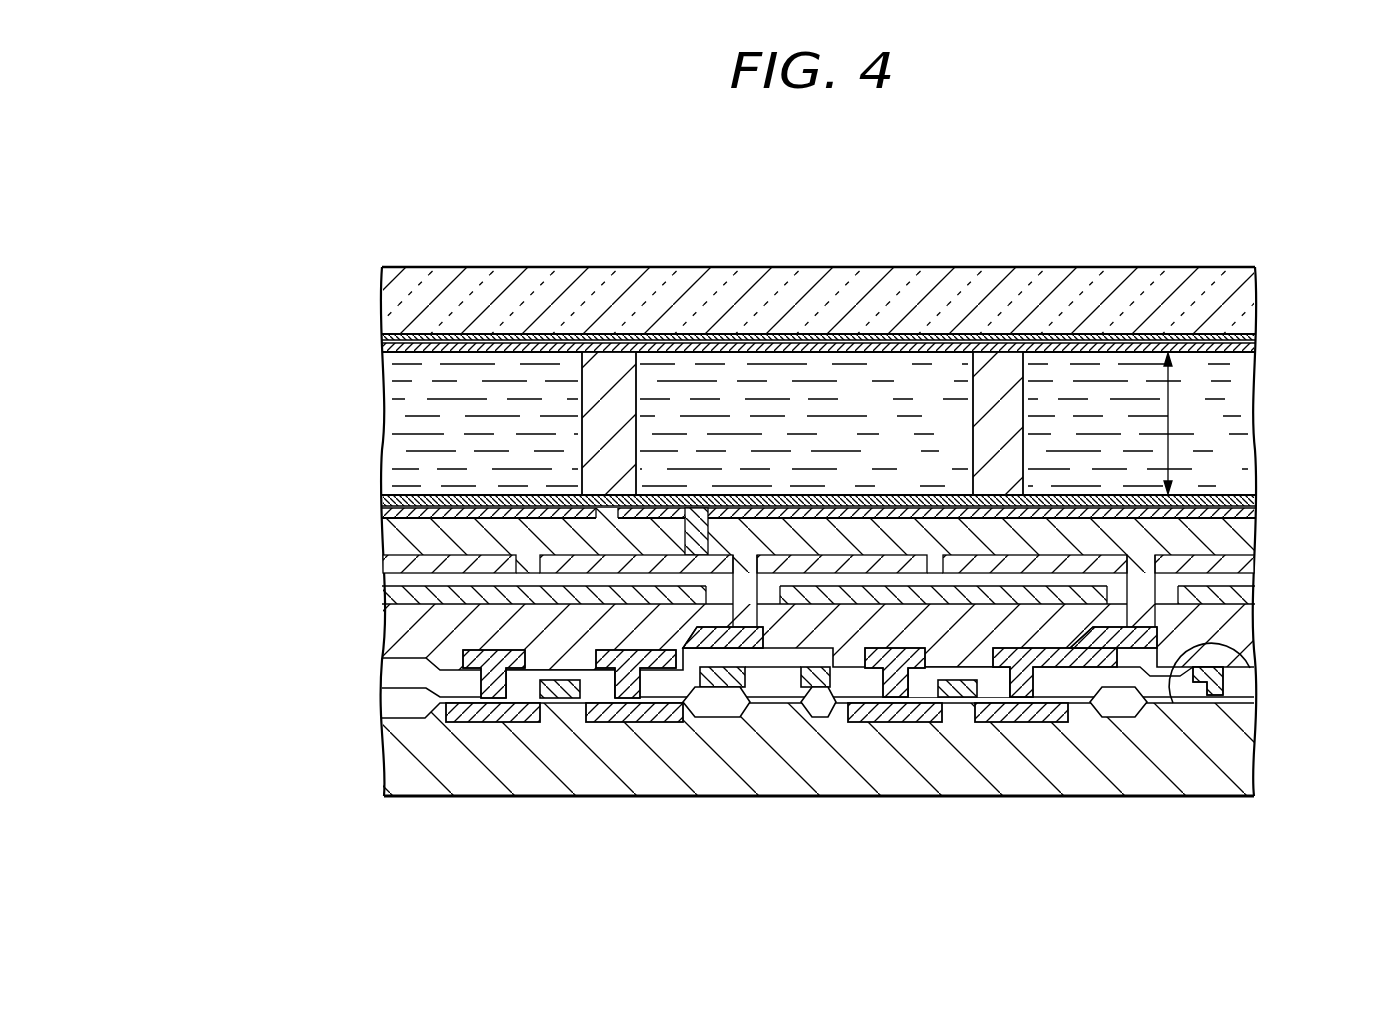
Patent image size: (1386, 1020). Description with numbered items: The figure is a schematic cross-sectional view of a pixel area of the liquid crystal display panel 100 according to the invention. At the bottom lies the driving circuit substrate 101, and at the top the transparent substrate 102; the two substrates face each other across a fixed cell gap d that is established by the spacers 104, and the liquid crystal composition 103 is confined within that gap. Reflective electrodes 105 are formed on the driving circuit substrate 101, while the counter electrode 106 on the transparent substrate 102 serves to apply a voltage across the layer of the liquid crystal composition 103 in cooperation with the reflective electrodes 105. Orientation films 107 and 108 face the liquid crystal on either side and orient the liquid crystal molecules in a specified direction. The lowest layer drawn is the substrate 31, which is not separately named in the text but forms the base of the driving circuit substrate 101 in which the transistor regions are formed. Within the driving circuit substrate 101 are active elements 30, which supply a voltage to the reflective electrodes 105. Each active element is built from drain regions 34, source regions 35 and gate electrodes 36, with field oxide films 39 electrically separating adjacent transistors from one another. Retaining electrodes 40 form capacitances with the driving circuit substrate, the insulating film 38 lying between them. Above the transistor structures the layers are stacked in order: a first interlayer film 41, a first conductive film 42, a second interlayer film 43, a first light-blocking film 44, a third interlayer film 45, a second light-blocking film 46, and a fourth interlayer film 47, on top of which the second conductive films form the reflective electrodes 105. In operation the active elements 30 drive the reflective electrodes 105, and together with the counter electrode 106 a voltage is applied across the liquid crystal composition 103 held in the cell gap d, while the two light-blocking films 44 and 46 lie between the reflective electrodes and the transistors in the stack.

The liquid crystal display panel 100 is at (1165, 796).
The driving circuit substrate 101 is at (1100, 775).
The transparent substrate 102 is at (1238, 290).
The liquid crystal composition 103 is at (1235, 388).
The spacers 104 is at (608, 380).
The reflective electrodes 105 is at (297, 503).
The counter electrode 106 is at (855, 345).
The orientation film 107 is at (420, 487).
The orientation film 108 is at (500, 337).
The active elements 30 is at (590, 775).
The glass substrate 31 is at (1245, 768).
The drain regions 34 is at (630, 718).
The source regions 35 is at (455, 722).
The gate electrodes 36 is at (553, 693).
The insulating film 38 is at (662, 692).
The field oxide films 39 is at (722, 708).
The retaining electrodes 40 is at (781, 692).
The first interlayer film 41 is at (929, 700).
The first conductive film 42 is at (878, 750).
The second interlayer film 43 is at (395, 633).
The first light-blocking film 44 is at (392, 600).
The third interlayer film 45 is at (400, 580).
The second light-blocking film 46 is at (742, 553).
The fourth interlayer film 47 is at (400, 540).